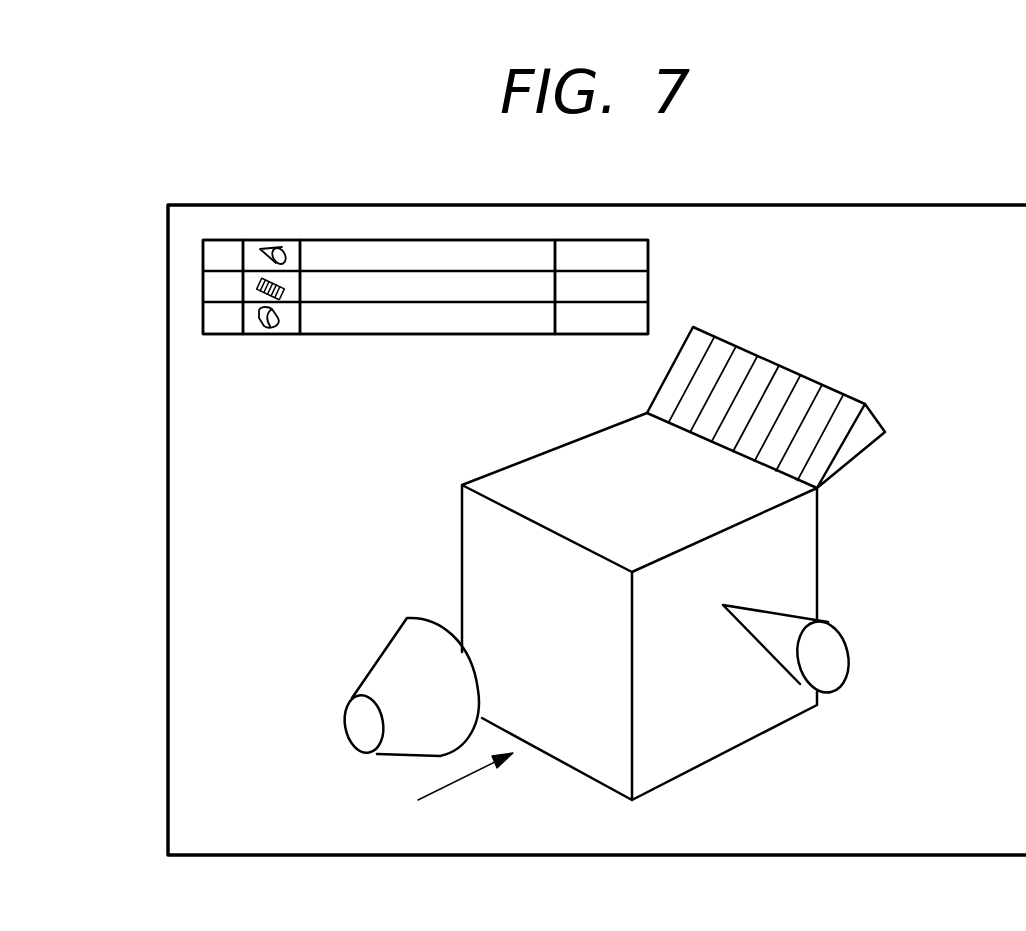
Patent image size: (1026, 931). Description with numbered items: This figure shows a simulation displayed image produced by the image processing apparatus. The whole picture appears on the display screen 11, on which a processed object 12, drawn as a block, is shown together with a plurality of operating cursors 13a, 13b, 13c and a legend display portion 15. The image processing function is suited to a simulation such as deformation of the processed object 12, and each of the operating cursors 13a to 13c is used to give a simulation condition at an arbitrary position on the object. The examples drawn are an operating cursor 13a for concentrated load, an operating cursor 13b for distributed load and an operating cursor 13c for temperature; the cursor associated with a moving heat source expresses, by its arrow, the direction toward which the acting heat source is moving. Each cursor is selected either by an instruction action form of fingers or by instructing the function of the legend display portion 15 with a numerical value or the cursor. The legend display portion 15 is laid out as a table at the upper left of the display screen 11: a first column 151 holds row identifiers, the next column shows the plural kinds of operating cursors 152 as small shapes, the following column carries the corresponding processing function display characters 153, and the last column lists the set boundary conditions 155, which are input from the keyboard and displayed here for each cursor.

The display screen 11 is at (178, 600).
The processed object 12 is at (575, 758).
The operating cursor for concentrated load 13a is at (840, 640).
The operating cursor for distributed load 13b is at (348, 733).
The operating cursor for temperature 13c is at (780, 368).
The legend display portion 15 is at (203, 290).
The number column 151 is at (232, 245).
The operating cursors 152 is at (290, 247).
The processing function display characters 153 is at (435, 242).
The boundary conditions 155 is at (630, 248).